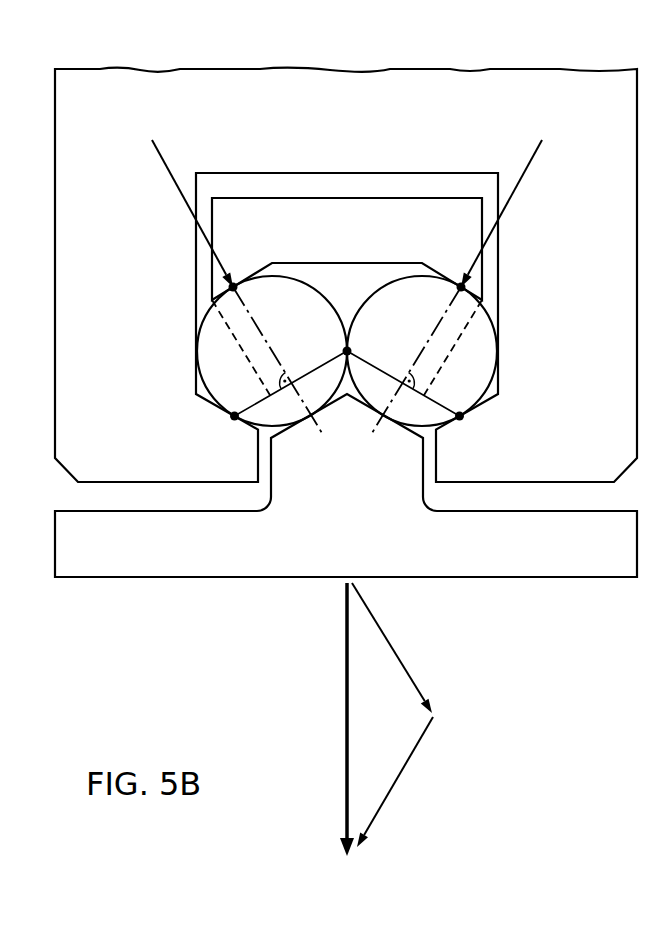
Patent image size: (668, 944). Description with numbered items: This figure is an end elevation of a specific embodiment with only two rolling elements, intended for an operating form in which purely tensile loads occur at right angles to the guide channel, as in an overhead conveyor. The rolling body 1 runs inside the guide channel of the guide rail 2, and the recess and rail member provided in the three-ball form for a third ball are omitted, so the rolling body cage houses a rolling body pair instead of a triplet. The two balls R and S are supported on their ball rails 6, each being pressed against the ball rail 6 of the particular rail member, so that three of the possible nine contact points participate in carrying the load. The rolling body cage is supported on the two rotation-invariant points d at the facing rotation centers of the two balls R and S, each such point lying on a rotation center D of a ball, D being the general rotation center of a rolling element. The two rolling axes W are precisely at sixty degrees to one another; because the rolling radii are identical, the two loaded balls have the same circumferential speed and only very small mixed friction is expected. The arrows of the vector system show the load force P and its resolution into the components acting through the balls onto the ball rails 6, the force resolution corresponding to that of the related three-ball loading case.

The rolling body 1 is at (283, 212).
The guide rail 2 is at (113, 82).
The ball rail 6 is at (233, 420).
The ball S is at (198, 338).
The ball R is at (497, 334).
The rolling axis W is at (274, 346).
The rotation center D is at (306, 430).
The rotation-invariant point d is at (238, 290).
The load force P is at (345, 498).